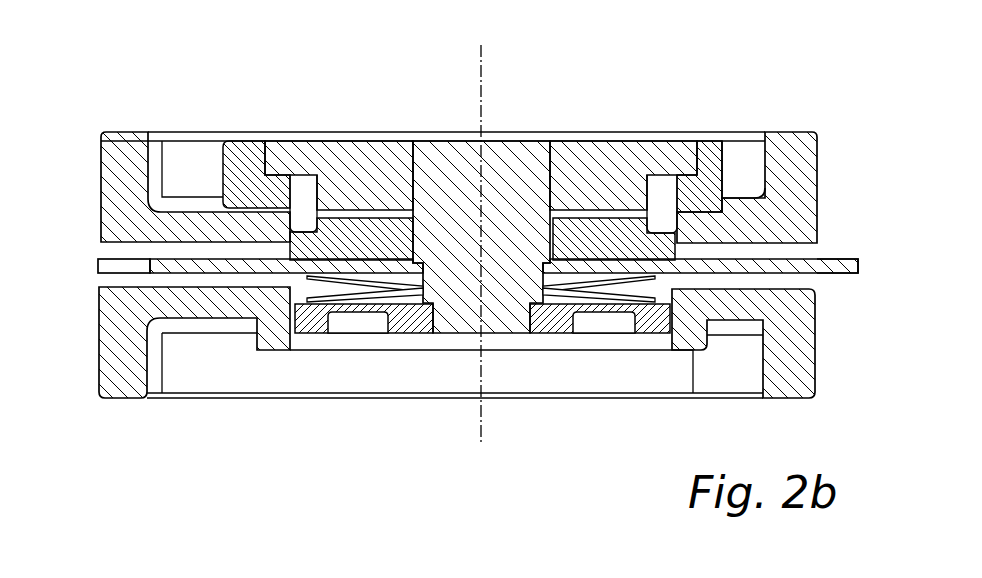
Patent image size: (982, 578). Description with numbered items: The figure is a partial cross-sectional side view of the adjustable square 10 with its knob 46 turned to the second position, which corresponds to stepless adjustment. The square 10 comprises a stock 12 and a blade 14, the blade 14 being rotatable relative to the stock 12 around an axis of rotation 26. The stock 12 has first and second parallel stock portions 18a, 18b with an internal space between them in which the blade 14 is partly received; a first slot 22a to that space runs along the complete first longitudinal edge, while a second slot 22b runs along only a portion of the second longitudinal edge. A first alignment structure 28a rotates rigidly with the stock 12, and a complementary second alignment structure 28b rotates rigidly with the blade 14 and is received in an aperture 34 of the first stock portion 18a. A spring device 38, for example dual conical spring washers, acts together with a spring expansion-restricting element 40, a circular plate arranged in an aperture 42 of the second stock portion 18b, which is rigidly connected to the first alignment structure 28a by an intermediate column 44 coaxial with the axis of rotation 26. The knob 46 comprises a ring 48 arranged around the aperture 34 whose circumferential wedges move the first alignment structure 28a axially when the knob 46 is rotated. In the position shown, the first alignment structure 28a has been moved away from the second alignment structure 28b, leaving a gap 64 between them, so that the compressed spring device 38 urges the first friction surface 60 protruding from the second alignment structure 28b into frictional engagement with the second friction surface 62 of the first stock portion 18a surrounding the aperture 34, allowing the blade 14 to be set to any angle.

The square 10 is at (800, 110).
The stock 12 is at (92, 220).
The blade 14 is at (852, 267).
The first stock portion 18a is at (100, 150).
The second stock portion 18b is at (99, 350).
The first slot 22a is at (790, 252).
The second slot 22b is at (100, 256).
The axis of rotation 26 is at (489, 62).
The first alignment structure 28a is at (372, 197).
The second alignment structure 28b is at (392, 400).
The aperture 34 is at (650, 238).
The spring device 38 is at (612, 400).
The spring expansion-restricting element 40 is at (546, 320).
The aperture 42 is at (655, 333).
The intermediate column 44 is at (522, 242).
The knob 46 is at (222, 183).
The ring 48 is at (247, 152).
The first friction surface 60 is at (300, 238).
The second friction surface 62 is at (302, 212).
The gap 64 is at (590, 258).